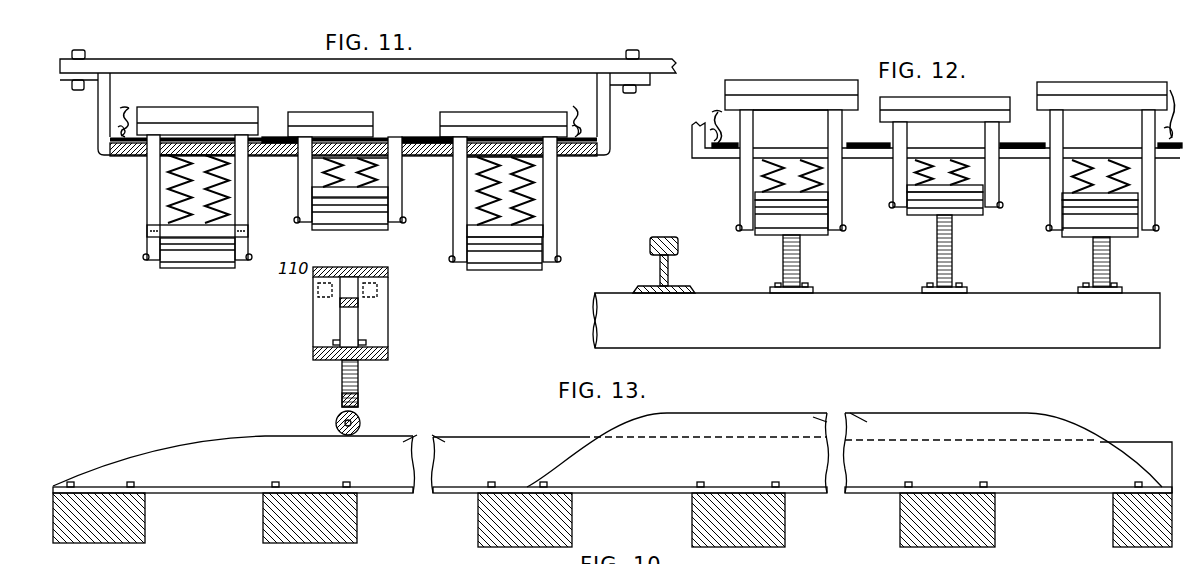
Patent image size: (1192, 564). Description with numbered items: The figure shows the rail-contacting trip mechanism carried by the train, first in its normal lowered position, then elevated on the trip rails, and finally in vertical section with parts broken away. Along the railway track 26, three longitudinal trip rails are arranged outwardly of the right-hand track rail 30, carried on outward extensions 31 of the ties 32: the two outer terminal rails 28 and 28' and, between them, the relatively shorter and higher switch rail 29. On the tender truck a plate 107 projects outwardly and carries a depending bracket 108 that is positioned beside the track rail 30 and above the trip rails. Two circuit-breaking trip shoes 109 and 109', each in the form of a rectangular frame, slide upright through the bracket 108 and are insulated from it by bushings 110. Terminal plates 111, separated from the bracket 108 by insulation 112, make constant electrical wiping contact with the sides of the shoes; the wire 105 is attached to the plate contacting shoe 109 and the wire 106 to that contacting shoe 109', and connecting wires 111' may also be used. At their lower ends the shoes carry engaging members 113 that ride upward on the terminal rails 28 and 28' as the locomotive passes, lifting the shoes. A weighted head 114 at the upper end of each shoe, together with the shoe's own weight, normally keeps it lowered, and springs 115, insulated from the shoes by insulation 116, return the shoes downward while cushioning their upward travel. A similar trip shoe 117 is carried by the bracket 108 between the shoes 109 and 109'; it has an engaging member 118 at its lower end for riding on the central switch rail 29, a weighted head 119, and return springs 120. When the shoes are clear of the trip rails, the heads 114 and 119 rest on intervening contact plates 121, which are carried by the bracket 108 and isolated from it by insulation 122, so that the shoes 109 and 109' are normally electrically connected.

In FIG. 13, the railway track 26 is at (612, 480).
In FIG. 12, the terminal trip rail 28 is at (771, 264).
In FIG. 13, the terminal trip rail 28 is at (424, 427).
In FIG. 12, the terminal trip rail 28' is at (1081, 265).
In FIG. 12, the switch rail 29 is at (940, 268).
In FIG. 13, the switch rail 29 is at (840, 406).
In FIG. 12, the track rail 30 is at (664, 236).
In FIG. 12, the outward extensions 31 is at (876, 320).
In FIG. 12, the ties 32 is at (606, 320).
In FIG. 11, the wire 105 is at (574, 115).
In FIG. 12, the wire 105 is at (1163, 130).
In FIG. 11, the wire 106 is at (124, 117).
In FIG. 12, the wire 106 is at (714, 122).
In FIG. 11, the plate 107 is at (531, 62).
In FIG. 11, the bracket 108 is at (603, 128).
In FIG. 12, the bracket 108 is at (694, 134).
In FIG. 11, the trip shoe 109 is at (450, 242).
In FIG. 12, the trip shoe 109 is at (1102, 193).
In FIG. 11, the trip shoe 109' is at (165, 197).
In FIG. 12, the trip shoe 109' is at (768, 183).
In FIG. 11, the bushings 110 is at (148, 163).
In FIG. 11, the terminal plates 111 is at (355, 234).
In FIG. 11, the connecting wires 111' is at (165, 72).
In FIG. 12, the connecting wires 111' is at (943, 93).
In FIG. 11, the insulation 112 is at (112, 146).
In FIG. 11, the engaging members 113 is at (210, 268).
In FIG. 12, the engaging members 113 is at (806, 226).
In FIG. 11, the weighted head 114 is at (191, 108).
In FIG. 12, the weighted head 114 is at (796, 82).
In FIG. 11, the springs 115 is at (232, 226).
In FIG. 12, the springs 115 is at (766, 176).
In FIG. 11, the insulation 116 is at (160, 230).
In FIG. 11, the trip shoe 117 is at (402, 183).
In FIG. 12, the trip shoe 117 is at (893, 170).
In FIG. 11, the engaging member 118 is at (336, 214).
In FIG. 12, the engaging member 118 is at (932, 202).
In FIG. 11, the weighted head 119 is at (347, 112).
In FIG. 12, the weighted head 119 is at (790, 126).
In FIG. 11, the return springs 120 is at (312, 189).
In FIG. 12, the return springs 120 is at (914, 186).
In FIG. 11, the contact plates 121 is at (264, 136).
In FIG. 12, the contact plates 121 is at (1024, 143).
In FIG. 11, the insulation 122 is at (325, 166).
In FIG. 12, the insulation 122 is at (1032, 152).